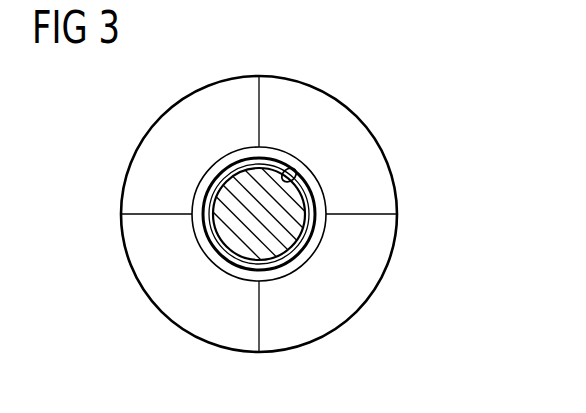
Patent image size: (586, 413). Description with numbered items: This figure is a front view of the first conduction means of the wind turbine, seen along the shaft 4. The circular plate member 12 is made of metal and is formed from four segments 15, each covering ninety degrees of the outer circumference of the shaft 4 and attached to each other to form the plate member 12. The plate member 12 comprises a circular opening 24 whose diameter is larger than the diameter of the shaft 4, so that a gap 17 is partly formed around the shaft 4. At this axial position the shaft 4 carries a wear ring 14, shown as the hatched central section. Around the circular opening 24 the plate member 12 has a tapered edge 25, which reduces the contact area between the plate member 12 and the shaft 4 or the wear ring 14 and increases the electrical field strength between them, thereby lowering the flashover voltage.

The plate member 12 is at (162, 113).
The segments 15 is at (147, 167).
The gap 17 is at (245, 147).
The wear ring 14 is at (283, 272).
The tapered edge 25 is at (320, 232).
The circular opening 24 is at (310, 172).
The shaft 4 is at (238, 237).